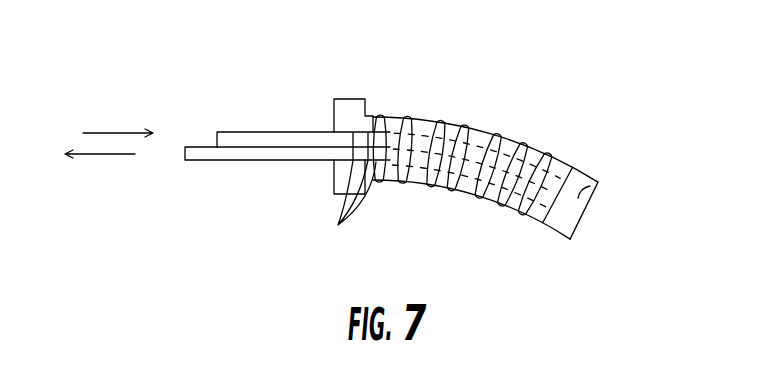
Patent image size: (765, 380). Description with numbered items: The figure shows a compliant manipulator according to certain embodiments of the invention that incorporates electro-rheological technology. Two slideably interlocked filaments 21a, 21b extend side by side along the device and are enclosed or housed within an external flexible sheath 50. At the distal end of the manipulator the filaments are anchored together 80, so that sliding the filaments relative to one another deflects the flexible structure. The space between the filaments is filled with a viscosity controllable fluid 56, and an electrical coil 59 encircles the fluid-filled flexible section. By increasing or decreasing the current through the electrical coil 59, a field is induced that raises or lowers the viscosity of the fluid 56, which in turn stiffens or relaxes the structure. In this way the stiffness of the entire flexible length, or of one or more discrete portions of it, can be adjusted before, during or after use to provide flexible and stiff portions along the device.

The filament 21a is at (242, 140).
The filament 21b is at (208, 162).
The external flexible sheath 50 is at (355, 105).
The viscosity controllable fluid 56 is at (338, 225).
The electrical coil 59 is at (467, 117).
The anchor 80 is at (598, 183).